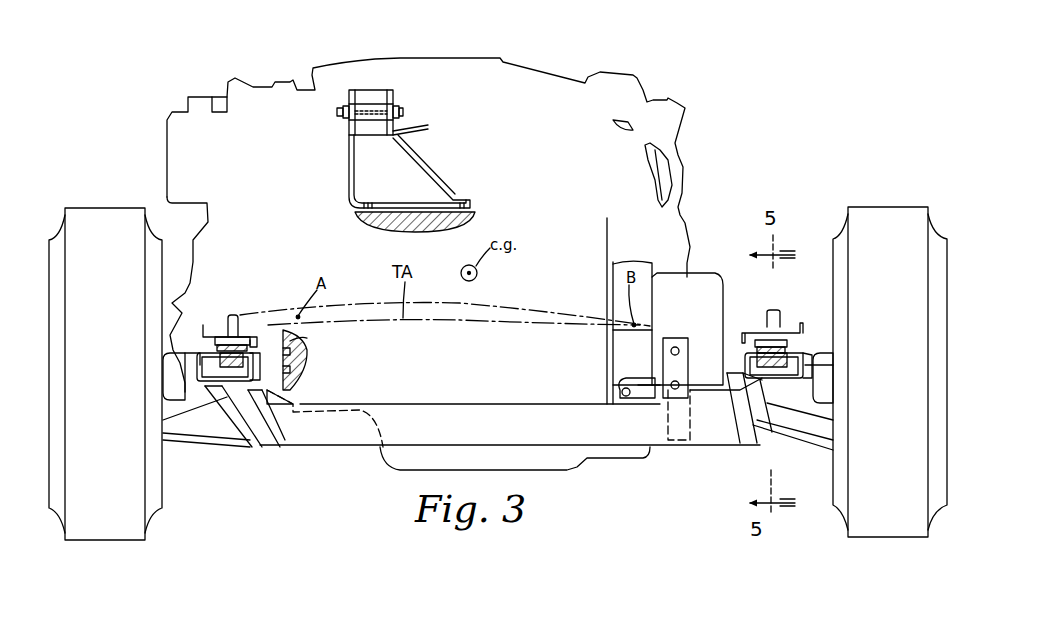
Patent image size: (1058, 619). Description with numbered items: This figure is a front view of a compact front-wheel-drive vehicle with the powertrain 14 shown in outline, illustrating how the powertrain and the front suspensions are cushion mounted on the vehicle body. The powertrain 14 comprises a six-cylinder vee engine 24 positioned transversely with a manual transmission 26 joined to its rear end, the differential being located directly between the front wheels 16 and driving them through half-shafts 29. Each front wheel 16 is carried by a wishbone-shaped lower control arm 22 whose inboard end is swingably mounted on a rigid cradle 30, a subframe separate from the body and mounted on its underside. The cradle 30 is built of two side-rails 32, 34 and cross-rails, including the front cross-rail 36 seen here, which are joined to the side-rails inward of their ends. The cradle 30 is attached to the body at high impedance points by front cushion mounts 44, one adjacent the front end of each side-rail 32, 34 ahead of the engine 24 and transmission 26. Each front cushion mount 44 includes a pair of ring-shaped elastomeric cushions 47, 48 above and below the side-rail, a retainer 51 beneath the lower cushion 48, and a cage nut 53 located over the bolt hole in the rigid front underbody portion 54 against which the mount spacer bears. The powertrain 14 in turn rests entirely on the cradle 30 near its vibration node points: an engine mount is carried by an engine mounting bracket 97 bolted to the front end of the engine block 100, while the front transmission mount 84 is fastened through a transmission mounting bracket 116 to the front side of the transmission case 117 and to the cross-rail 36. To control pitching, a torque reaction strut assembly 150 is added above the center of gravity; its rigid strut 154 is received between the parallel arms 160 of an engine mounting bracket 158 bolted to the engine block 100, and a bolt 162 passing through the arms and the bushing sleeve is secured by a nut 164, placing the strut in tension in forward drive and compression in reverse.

The powertrain 14 is at (458, 50).
The front wheels 16 is at (103, 222).
The lower control arm 22 is at (200, 428).
The V-6 engine 24 is at (258, 80).
The manual transmission 26 is at (648, 263).
The half-shafts 29 is at (190, 368).
The cradle 30 is at (356, 448).
The side-rail 32 is at (748, 436).
The side-rail 34 is at (268, 438).
The front cross-rail 36 is at (562, 428).
The front cushion mount 44 is at (243, 317).
The upper cushion 47 is at (262, 352).
The lower cushion 48 is at (235, 372).
The retainer 51 is at (805, 365).
The cage nut 53 is at (230, 322).
The front underbody portion 54 is at (243, 340).
The front transmission mount 84 is at (652, 402).
The engine mounting bracket 97 is at (303, 365).
The engine block 100 is at (472, 198).
The transmission mounting bracket 116 is at (677, 360).
The transmission case 117 is at (632, 352).
The torque reaction strut assembly 150 is at (365, 86).
The strut 154 is at (386, 106).
The engine mounting bracket 158 is at (438, 190).
The parallel arms 160 is at (428, 123).
The bolt 162 is at (403, 112).
The nut 164 is at (338, 116).